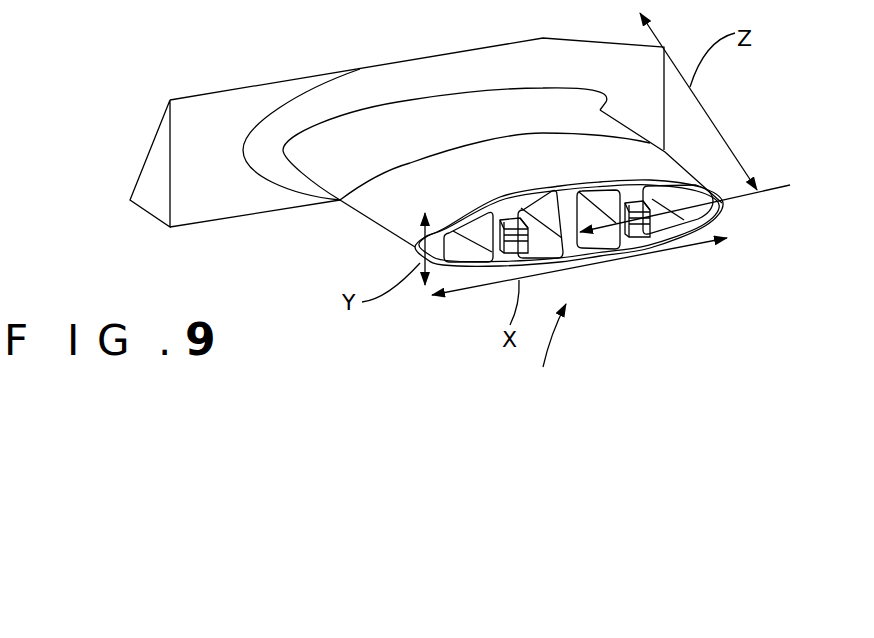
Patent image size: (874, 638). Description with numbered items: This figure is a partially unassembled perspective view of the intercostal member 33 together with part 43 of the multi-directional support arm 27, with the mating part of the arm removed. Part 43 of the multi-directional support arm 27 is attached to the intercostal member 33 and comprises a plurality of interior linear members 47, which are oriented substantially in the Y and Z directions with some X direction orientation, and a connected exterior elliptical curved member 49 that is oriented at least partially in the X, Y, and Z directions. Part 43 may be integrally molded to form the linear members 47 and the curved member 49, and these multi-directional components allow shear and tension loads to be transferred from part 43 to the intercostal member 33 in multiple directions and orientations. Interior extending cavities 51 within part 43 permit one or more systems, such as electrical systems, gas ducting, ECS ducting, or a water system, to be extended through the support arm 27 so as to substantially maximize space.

The multi-directional support arm 27 is at (549, 353).
The intercostal member 33 is at (198, 117).
The part of multi-directional support arm 43 is at (680, 162).
The interior linear members 47 is at (517, 255).
The exterior elliptical curved member 49 is at (452, 263).
The interior extending cavities 51 is at (458, 238).